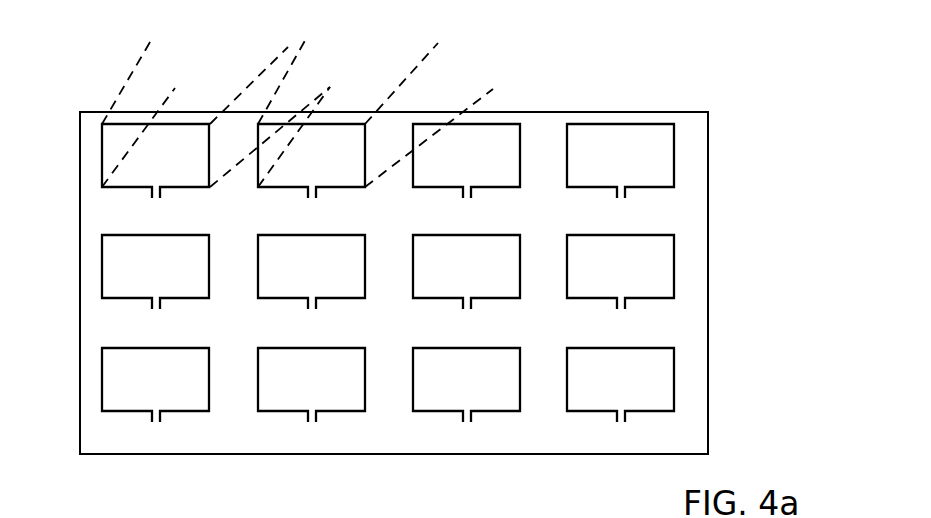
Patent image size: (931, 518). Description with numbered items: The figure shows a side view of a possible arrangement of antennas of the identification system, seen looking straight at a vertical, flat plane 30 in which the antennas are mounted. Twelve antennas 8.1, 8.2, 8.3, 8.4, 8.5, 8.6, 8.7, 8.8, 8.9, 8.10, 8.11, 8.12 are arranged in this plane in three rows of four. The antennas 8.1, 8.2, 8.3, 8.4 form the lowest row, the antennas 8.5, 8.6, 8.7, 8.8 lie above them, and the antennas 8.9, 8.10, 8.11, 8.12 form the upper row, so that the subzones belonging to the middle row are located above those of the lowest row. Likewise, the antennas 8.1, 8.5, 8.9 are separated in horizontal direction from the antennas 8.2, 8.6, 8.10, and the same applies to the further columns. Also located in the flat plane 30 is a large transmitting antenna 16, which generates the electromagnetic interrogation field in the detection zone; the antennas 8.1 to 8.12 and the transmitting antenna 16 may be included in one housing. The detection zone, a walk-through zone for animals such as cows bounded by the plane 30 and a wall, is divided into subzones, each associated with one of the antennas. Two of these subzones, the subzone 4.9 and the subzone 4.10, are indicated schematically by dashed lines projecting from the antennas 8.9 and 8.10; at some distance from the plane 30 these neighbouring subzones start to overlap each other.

The antenna 8.1 is at (195, 400).
The antenna 8.2 is at (351, 400).
The antenna 8.3 is at (506, 400).
The antenna 8.4 is at (660, 400).
The antenna 8.5 is at (195, 287).
The antenna 8.6 is at (351, 287).
The antenna 8.7 is at (506, 287).
The antenna 8.8 is at (660, 287).
The antenna 8.9 is at (195, 176).
The antenna 8.10 is at (351, 176).
The antenna 8.11 is at (506, 176).
The antenna 8.12 is at (645, 174).
The subzone 4.9 is at (150, 90).
The subzone 4.10 is at (440, 94).
The vertical, flat plane 30 is at (700, 143).
The large transmitting antenna 16 is at (708, 438).